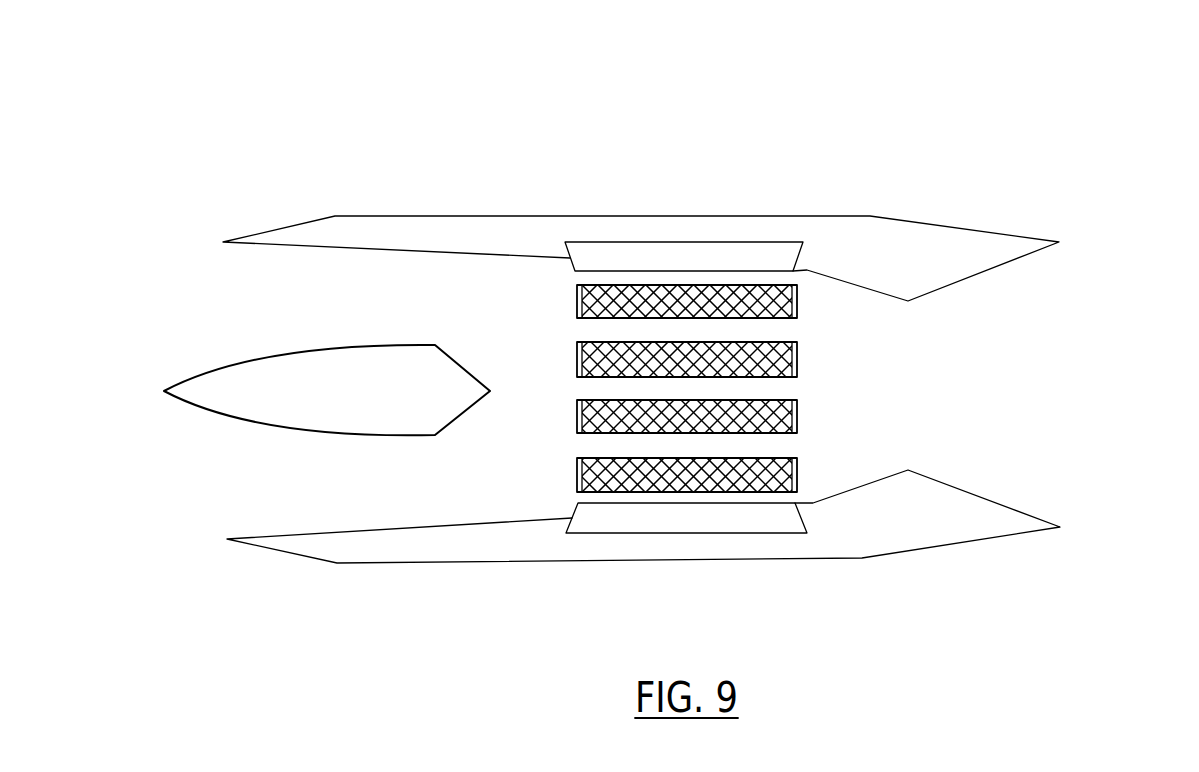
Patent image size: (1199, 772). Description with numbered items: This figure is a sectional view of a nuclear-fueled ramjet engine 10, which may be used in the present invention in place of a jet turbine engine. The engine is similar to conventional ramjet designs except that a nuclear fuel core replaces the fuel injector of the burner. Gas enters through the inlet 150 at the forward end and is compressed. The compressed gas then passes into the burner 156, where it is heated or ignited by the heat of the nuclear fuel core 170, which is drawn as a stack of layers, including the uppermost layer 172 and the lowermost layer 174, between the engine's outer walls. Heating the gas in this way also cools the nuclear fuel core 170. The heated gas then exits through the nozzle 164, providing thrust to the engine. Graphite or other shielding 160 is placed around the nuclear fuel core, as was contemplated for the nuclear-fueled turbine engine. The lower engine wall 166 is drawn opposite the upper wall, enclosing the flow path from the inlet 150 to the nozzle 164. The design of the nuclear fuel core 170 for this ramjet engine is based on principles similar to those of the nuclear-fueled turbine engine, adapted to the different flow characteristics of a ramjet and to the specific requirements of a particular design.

The heat exchanger assembly 10 is at (651, 42).
The inlet 150 is at (204, 310).
The burner 156 is at (809, 203).
The shielding 160 is at (681, 519).
The nozzle 164 is at (1028, 334).
The lower wing panel 166 is at (363, 570).
The nuclear fuel core 170 is at (848, 408).
The first fin layer 172 is at (573, 302).
The last fin layer 174 is at (599, 445).